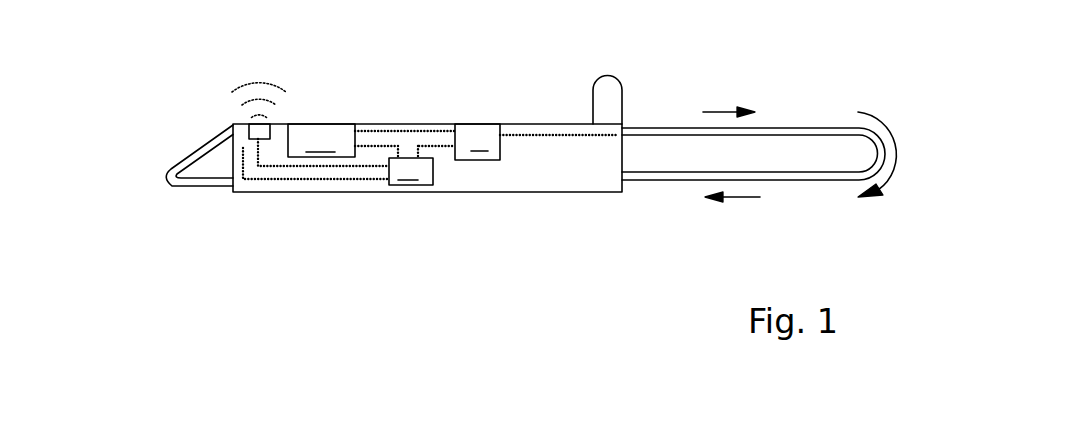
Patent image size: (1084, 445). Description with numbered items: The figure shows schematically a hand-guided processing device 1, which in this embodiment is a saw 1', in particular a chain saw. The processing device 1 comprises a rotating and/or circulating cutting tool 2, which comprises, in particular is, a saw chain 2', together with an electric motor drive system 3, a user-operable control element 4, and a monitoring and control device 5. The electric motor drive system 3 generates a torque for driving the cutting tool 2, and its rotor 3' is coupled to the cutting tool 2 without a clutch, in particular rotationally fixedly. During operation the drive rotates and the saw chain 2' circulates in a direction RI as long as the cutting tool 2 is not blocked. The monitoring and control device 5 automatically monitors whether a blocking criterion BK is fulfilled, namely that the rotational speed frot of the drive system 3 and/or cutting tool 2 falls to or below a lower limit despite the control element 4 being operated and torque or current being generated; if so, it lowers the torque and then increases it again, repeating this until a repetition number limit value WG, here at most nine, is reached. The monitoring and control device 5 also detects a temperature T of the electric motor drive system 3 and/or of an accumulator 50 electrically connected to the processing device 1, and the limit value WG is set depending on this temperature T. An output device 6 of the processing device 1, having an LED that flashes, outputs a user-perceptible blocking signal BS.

The hand-guided processing device 1 is at (359, 132).
The saw 1' is at (367, 100).
The cutting tool 2 is at (753, 190).
The saw chain 2' is at (750, 177).
The electric motor drive system 3 is at (536, 142).
The rotor 3' is at (535, 98).
The user-operable control element 4 is at (210, 152).
The monitoring and control device 5 is at (411, 165).
The output device 6 is at (248, 131).
The accumulator 50 is at (371, 140).
The blocking signal BS is at (262, 83).
The temperature T is at (320, 123).
The rotational speed frot is at (493, 132).
The direction RI is at (722, 111).
The blocking criterion BK is at (400, 183).
The repetition number limit value WG is at (420, 181).